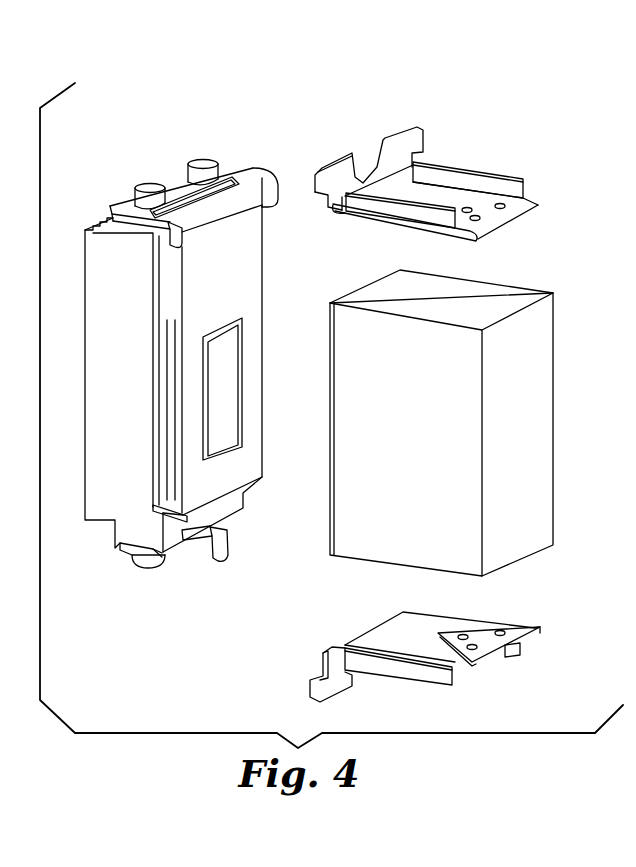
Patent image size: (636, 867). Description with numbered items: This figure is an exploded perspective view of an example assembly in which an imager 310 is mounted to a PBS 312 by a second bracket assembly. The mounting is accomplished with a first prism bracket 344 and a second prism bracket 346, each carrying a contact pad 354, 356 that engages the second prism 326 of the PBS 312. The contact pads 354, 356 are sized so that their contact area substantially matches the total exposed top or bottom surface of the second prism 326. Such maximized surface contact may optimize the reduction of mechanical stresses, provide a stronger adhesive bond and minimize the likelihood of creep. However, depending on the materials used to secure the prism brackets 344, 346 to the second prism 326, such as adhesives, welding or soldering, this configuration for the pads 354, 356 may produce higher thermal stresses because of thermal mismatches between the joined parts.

The imager 310 is at (88, 490).
The PBS 312 is at (474, 423).
The second prism 326 is at (532, 493).
The first prism bracket 344 is at (426, 199).
The contact pad 354 is at (440, 233).
The second prism bracket 346 is at (425, 668).
The contact pad 356 is at (485, 642).